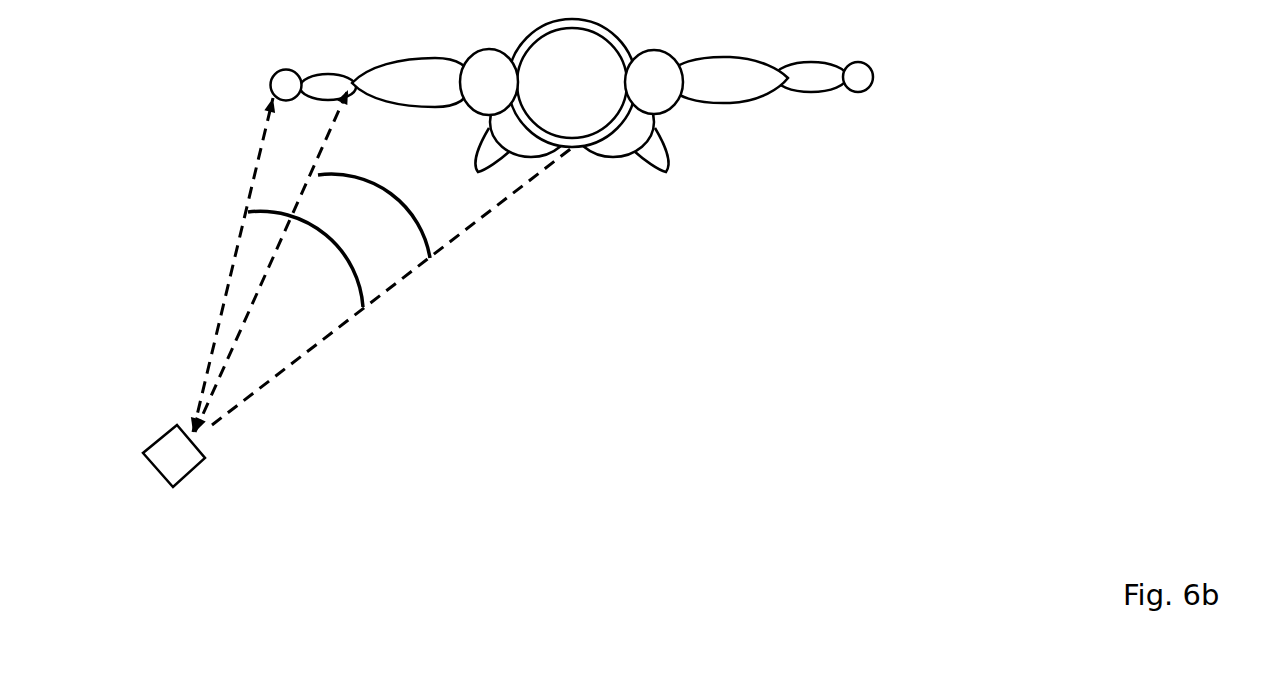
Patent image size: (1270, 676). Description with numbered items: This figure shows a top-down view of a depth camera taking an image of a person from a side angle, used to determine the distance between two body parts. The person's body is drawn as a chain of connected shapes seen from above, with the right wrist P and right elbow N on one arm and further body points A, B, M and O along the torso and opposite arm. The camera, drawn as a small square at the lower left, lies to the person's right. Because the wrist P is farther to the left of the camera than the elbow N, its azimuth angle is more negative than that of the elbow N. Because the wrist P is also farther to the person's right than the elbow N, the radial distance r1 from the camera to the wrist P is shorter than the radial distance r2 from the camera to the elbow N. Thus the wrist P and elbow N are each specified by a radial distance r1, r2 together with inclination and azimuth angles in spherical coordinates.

The right wrist P is at (278, 70).
The right elbow N is at (386, 61).
The point A on target body A is at (480, 98).
The point B on target body B is at (658, 100).
The point M on target M is at (757, 99).
The point O on target (head end) O is at (864, 99).
The radial distance r1 is at (233, 265).
The radial distance r2 is at (287, 261).